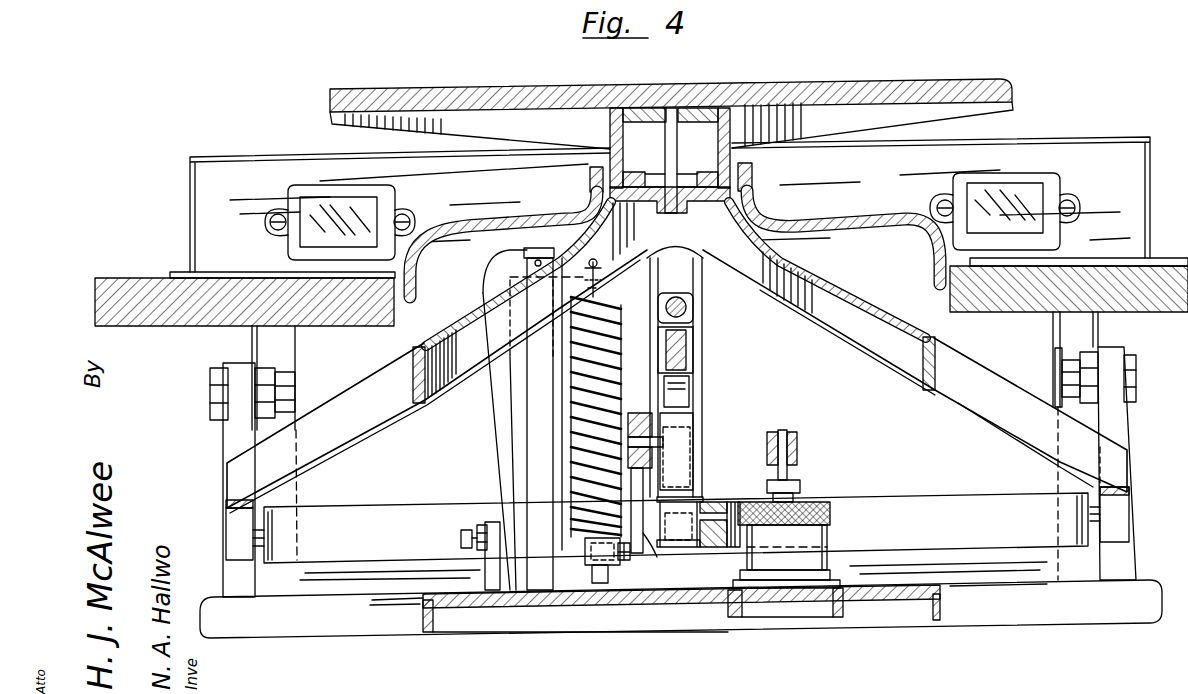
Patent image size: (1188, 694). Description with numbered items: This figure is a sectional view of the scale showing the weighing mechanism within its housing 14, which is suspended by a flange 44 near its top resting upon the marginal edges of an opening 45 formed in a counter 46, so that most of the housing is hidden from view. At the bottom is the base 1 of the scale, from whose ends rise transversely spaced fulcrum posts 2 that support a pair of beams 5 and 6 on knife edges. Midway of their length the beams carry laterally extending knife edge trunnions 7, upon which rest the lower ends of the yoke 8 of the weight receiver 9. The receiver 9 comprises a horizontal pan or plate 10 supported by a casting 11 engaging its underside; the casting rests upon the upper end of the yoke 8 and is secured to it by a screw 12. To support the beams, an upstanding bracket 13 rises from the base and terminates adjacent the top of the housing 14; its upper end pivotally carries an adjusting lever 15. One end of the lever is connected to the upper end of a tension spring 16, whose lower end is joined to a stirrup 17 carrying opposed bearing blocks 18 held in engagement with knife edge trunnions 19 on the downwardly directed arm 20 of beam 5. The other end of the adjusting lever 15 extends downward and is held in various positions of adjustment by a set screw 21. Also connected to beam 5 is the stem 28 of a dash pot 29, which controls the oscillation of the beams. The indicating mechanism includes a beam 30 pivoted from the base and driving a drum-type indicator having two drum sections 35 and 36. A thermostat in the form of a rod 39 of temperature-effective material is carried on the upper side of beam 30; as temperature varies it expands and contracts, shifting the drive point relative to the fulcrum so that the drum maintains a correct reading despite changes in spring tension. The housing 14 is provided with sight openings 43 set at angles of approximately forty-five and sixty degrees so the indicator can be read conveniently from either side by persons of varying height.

The base 1 is at (390, 622).
The fulcrum posts 2 is at (230, 441).
The beam 5 is at (648, 424).
The beam 6 is at (352, 548).
The knife edge trunnions 7 is at (253, 547).
The yoke 8 is at (843, 330).
The weight receiver 9 is at (596, 154).
The horizontal pan or plate 10 is at (800, 84).
The casting 11 is at (800, 128).
The screw 12 is at (677, 130).
The upstanding bracket 13 is at (543, 440).
The housing 14 is at (474, 237).
The adjusting lever 15 is at (503, 390).
The tension spring 16 is at (616, 341).
The stirrup 17 is at (593, 566).
The bearing blocks 18 is at (606, 572).
The knife edge trunnions 19 is at (630, 561).
The downwardly directed arm 20 is at (646, 537).
The set screw 21 is at (461, 541).
The stem 28 is at (780, 474).
The dash pot 29 is at (803, 536).
The beam 30 is at (684, 347).
The drum section 35 is at (1030, 335).
The drum section 36 is at (301, 341).
The rod 39 is at (690, 302).
The sight openings 43 is at (372, 201).
The flange 44 is at (178, 272).
The opening 45 is at (950, 290).
The counter 46 is at (363, 313).